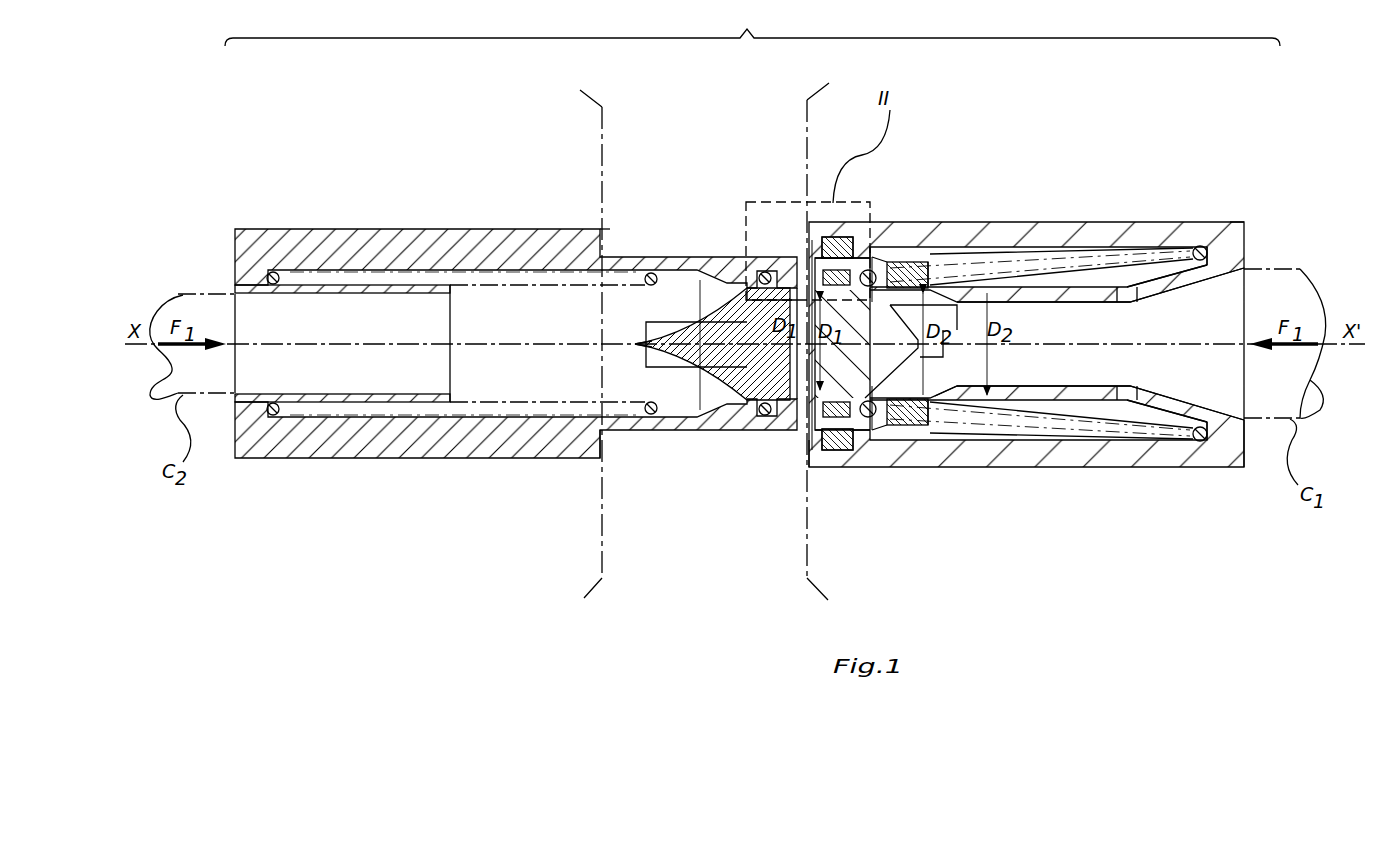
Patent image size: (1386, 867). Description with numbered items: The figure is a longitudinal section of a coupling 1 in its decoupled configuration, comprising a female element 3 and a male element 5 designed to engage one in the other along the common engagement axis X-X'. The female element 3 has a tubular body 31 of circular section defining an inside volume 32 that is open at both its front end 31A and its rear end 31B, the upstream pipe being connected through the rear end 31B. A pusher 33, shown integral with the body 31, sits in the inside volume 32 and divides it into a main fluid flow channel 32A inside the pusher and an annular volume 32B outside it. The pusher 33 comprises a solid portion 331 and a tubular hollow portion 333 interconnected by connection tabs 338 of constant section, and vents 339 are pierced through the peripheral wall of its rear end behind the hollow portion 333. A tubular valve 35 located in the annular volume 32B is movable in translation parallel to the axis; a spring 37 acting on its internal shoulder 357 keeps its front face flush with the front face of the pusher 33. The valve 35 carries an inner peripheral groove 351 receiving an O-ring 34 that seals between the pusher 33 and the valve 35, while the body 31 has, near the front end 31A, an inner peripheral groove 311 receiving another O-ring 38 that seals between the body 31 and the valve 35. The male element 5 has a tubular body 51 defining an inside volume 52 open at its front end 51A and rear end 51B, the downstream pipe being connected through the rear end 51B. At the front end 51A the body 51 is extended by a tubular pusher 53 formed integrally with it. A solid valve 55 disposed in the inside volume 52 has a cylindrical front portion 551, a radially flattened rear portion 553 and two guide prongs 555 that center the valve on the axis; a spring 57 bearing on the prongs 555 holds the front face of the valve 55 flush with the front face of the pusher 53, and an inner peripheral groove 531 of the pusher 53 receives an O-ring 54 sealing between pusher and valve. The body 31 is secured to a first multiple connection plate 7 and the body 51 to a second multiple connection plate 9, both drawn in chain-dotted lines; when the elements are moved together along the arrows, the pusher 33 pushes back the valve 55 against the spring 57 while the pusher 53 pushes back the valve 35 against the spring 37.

The coupling 1 is at (752, 25).
The female element 3 is at (1097, 165).
The male element 5 is at (397, 188).
The first multiple connection plate 7 is at (803, 590).
The second multiple connection plate 9 is at (606, 525).
The tubular body of female element 31 is at (1115, 455).
The front end of female body 31A is at (802, 455).
The rear end of female body 31B is at (1249, 438).
The inside volume of female body 32 is at (1240, 300).
The main fluid flow channel 32A is at (1100, 344).
The annular volume 32B is at (1048, 343).
The pusher of female element 33 is at (1040, 400).
The O-ring 34 is at (803, 272).
The tubular valve of female element 35 is at (905, 262).
The spring 37 is at (965, 400).
The O-ring 38 is at (835, 455).
The tubular body of male element 51 is at (452, 447).
The front end of male body 51A is at (606, 447).
The rear end of male body 51B is at (232, 434).
The inside volume of male body 52 is at (246, 309).
The pusher of male element 53 is at (645, 270).
The O-ring 54 is at (764, 420).
The valve of male element 55 is at (700, 300).
The spring 57 is at (357, 410).
The inner peripheral groove of female body 311 is at (850, 260).
The solid portion of female pusher 331 is at (880, 270).
The hollow portion of female pusher 333 is at (1025, 292).
The connection tabs 338 is at (935, 295).
The vents 339 is at (1150, 402).
The inner peripheral groove of female valve 351 is at (860, 442).
The internal shoulder of female valve 357 is at (905, 432).
The inner peripheral groove of male pusher 531 is at (742, 290).
The cylindrical front portion of male valve 551 is at (780, 432).
The rear portion of male valve 553 is at (702, 368).
The guide prongs 555 is at (672, 355).